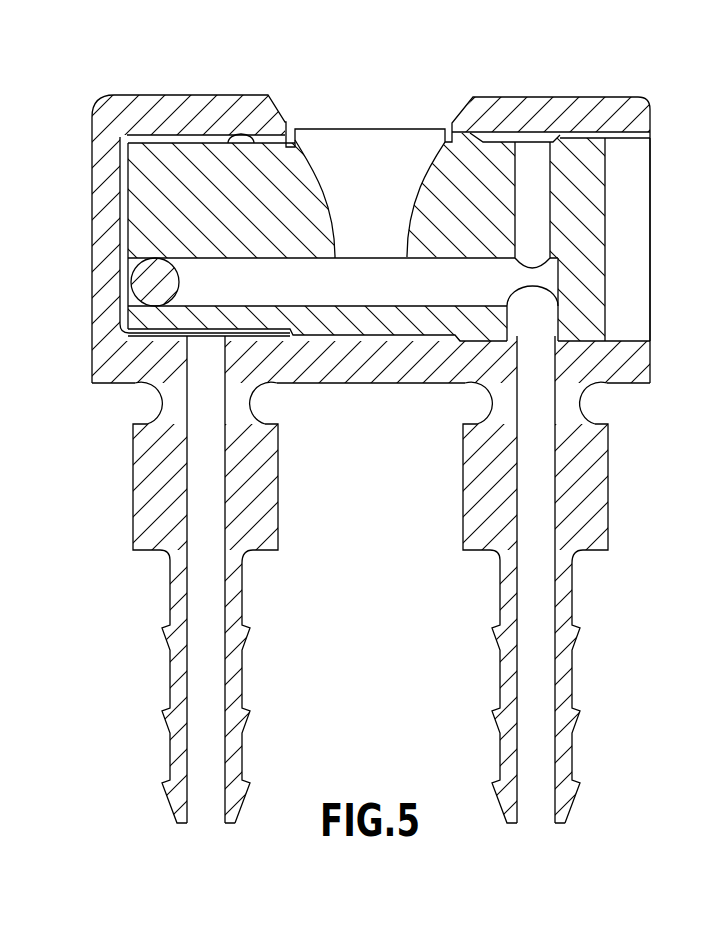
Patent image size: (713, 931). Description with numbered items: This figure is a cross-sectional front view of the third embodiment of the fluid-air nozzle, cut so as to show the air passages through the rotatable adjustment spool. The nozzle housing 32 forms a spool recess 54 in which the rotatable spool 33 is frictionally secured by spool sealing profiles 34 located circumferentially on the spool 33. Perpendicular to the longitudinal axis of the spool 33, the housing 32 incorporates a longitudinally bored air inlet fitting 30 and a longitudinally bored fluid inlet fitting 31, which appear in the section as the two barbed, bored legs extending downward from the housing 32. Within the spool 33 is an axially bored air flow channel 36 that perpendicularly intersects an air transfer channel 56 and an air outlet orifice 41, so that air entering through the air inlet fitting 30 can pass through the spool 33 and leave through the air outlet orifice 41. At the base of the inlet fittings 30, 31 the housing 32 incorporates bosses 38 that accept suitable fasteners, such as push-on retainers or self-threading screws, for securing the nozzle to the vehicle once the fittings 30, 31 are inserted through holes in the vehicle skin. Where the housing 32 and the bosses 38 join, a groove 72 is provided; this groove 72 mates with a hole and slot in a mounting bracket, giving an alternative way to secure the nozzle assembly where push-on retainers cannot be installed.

The spool recess 54 is at (90, 125).
The nozzle housing 32 is at (198, 95).
The spool sealing profiles 34 is at (250, 138).
The air outlet orifice 41 is at (372, 147).
The air flow channel 36 is at (373, 262).
The air transfer channel 56 is at (538, 197).
The rotatable spool 33 is at (650, 243).
The groove 72 is at (582, 403).
The bosses 38 is at (280, 468).
The fluid inlet fitting 31 is at (203, 824).
The air inlet fitting 30 is at (532, 827).